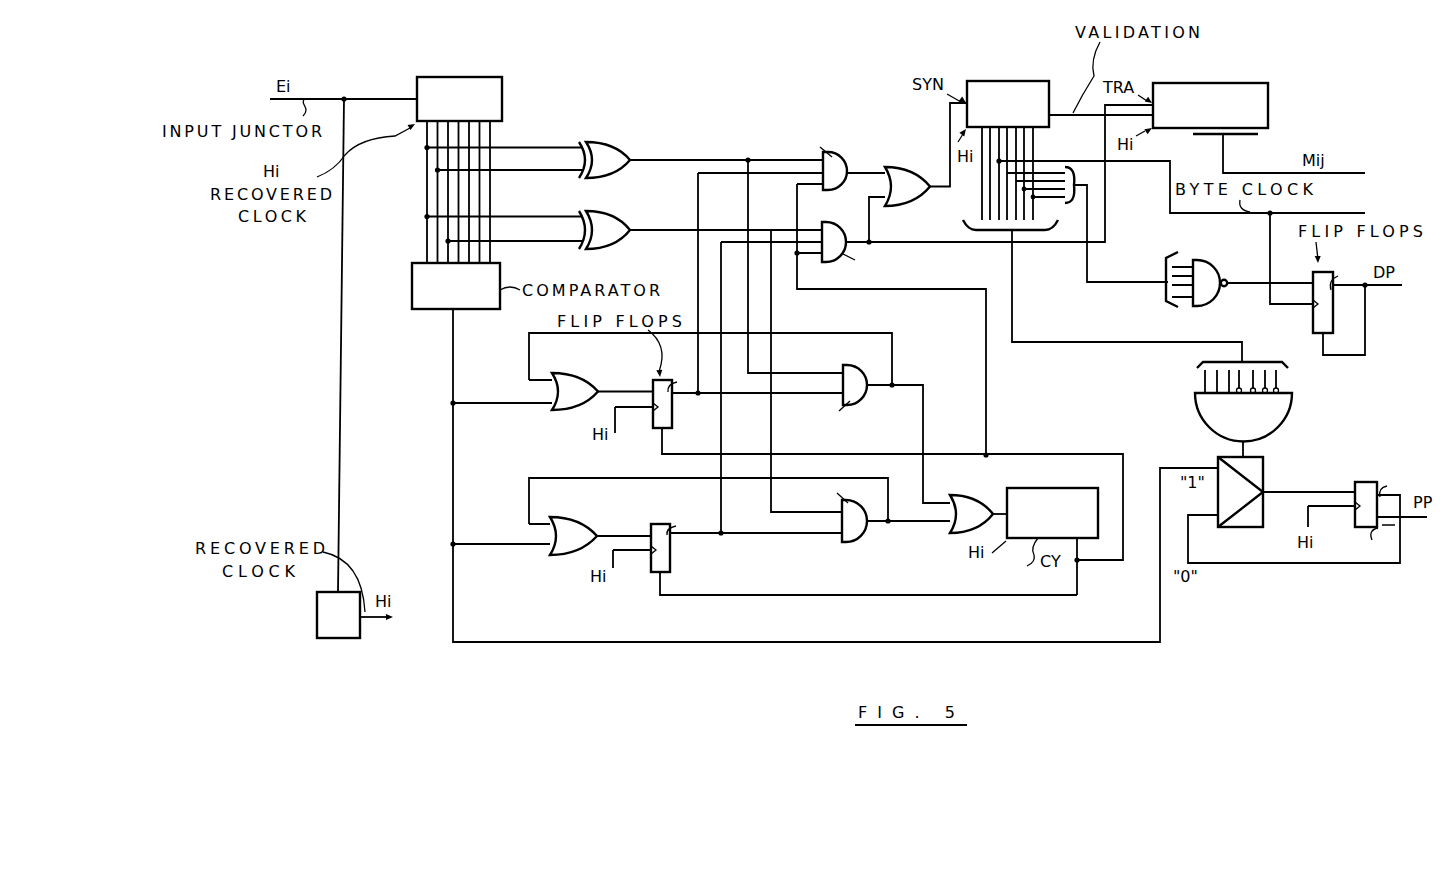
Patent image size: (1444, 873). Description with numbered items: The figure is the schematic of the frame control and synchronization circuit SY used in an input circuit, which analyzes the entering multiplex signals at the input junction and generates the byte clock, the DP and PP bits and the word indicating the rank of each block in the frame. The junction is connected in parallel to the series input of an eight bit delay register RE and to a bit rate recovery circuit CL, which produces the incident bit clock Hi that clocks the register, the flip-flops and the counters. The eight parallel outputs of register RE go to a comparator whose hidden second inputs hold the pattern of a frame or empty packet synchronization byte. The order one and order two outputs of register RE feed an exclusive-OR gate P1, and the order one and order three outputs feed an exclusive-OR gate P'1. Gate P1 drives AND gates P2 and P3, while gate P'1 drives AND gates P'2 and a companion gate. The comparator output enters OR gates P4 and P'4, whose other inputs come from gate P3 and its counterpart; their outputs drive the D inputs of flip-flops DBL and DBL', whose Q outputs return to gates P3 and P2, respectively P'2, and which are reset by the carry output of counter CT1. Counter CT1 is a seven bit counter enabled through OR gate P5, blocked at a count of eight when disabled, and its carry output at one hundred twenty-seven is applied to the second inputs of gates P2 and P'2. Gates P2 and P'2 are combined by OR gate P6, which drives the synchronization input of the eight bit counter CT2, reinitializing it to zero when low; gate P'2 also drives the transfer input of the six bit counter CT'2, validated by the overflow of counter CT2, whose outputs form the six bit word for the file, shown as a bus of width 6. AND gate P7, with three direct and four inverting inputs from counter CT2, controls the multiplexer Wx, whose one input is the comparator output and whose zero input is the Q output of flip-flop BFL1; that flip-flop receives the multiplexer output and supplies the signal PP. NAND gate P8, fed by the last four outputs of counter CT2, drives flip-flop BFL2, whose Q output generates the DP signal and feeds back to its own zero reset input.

The delay register RE is at (522, 62).
The bit rate recovery circuit CL is at (343, 638).
The exclusive-OR gate P1 is at (607, 157).
The exclusive-OR gate P'1 is at (621, 216).
The AND gate P2 is at (841, 156).
The AND gate P'2 is at (849, 236).
The AND gate P3 is at (863, 386).
The OR gate P4 is at (597, 371).
The OR gate P'4 is at (578, 524).
The OR gate P5 is at (968, 495).
The OR gate P6 is at (902, 166).
The AND gate P7 is at (1268, 418).
The NAND gate P8 is at (1205, 263).
The counter CT2 is at (1053, 60).
The counter CT'2 is at (1210, 95).
The counter CT1 is at (1014, 539).
The flip-flop DBL is at (683, 409).
The flip-flop DBL' is at (690, 545).
The flip-flop BFL1 is at (1356, 531).
The flip-flop BFL2 is at (1313, 320).
The multiplexer Wx is at (1241, 530).
The six-bit bus 6 is at (1218, 159).
The frame control and synchronization circuit SY is at (886, 501).